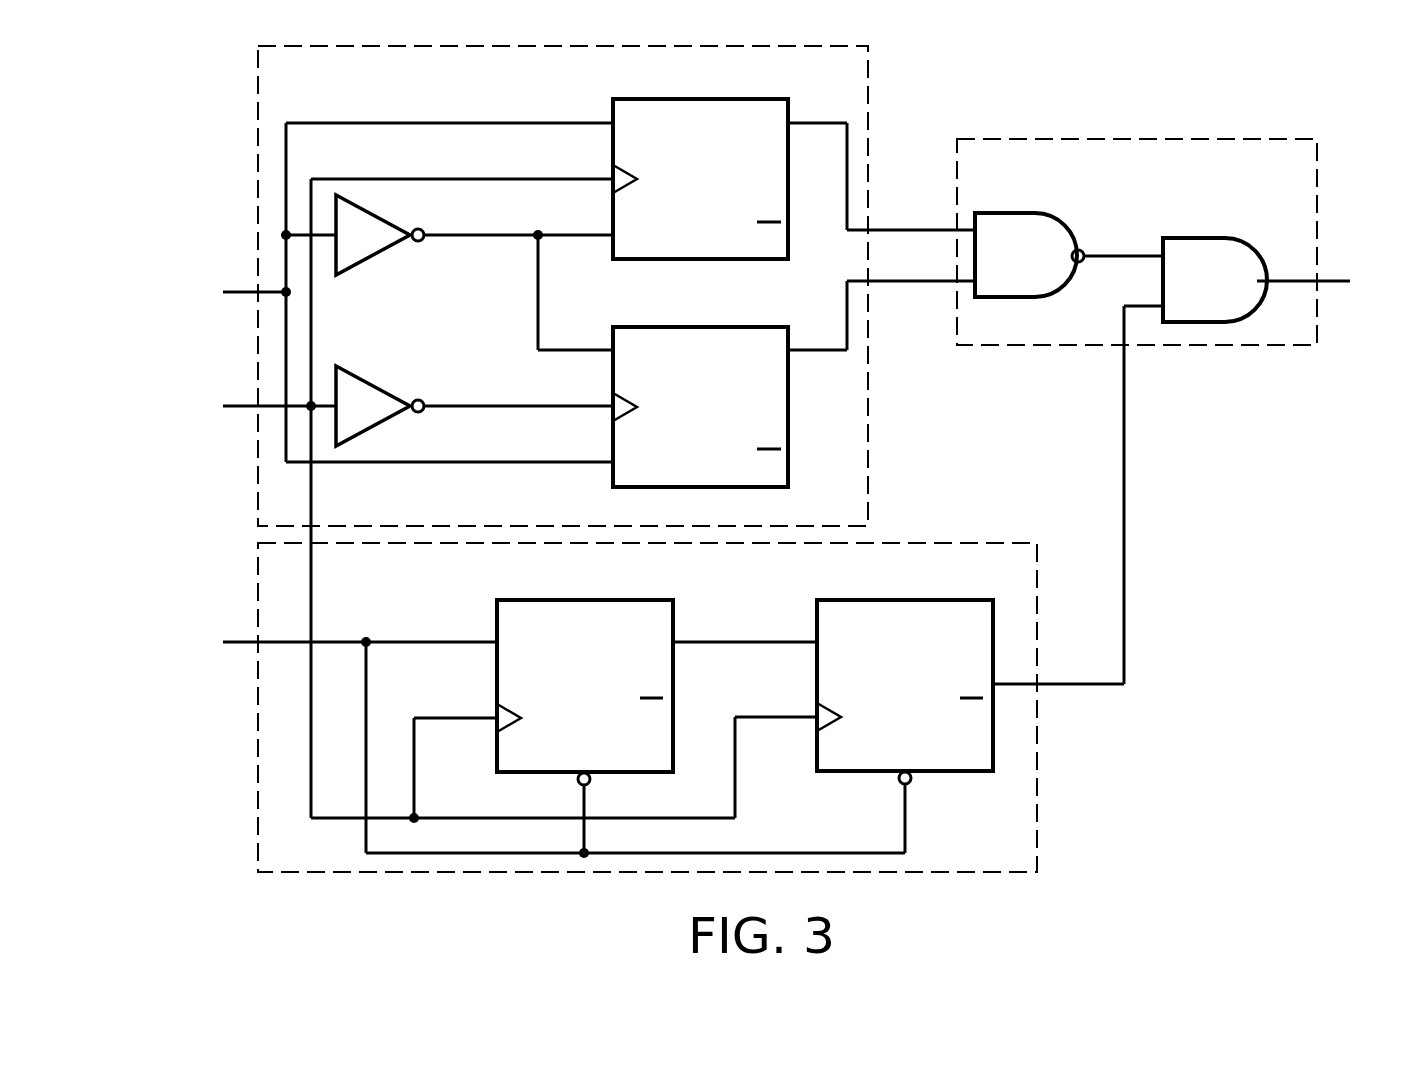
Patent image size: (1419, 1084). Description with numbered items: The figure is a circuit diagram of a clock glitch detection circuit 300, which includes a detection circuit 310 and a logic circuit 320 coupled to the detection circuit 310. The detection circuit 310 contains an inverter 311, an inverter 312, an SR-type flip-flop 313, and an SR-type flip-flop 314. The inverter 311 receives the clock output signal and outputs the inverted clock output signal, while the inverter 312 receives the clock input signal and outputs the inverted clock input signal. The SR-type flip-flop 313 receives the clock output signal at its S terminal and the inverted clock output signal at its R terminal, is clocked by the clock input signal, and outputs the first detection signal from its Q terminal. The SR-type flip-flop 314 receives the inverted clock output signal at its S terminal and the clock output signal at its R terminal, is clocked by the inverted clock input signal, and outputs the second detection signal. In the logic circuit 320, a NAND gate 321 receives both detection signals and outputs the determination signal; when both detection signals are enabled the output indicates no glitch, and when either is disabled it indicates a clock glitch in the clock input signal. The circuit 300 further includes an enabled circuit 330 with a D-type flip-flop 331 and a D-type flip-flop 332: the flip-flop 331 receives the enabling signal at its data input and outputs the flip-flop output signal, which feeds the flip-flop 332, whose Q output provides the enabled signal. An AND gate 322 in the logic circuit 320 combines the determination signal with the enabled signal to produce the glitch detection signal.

The clock glitch detection circuit 300 is at (1373, 888).
The detection circuit 310 is at (257, 118).
The inverter 311 is at (380, 256).
The inverter 312 is at (380, 427).
The SR-type flip-flop 313 is at (745, 99).
The SR-type flip-flop 314 is at (745, 327).
The logic circuit 320 is at (1223, 138).
The NAND gate 321 is at (1063, 226).
The AND gate 322 is at (1247, 253).
The enabled circuit 330 is at (257, 770).
The D-type flip-flop 331 is at (630, 600).
The D-type flip-flop 332 is at (950, 600).